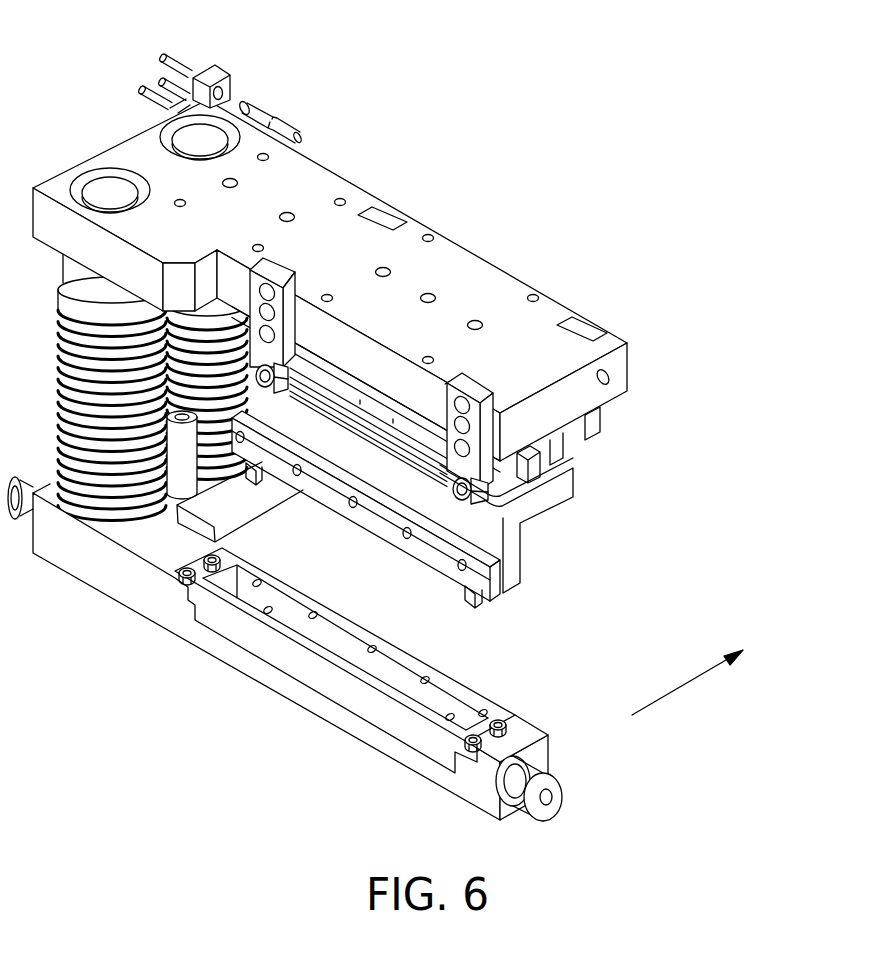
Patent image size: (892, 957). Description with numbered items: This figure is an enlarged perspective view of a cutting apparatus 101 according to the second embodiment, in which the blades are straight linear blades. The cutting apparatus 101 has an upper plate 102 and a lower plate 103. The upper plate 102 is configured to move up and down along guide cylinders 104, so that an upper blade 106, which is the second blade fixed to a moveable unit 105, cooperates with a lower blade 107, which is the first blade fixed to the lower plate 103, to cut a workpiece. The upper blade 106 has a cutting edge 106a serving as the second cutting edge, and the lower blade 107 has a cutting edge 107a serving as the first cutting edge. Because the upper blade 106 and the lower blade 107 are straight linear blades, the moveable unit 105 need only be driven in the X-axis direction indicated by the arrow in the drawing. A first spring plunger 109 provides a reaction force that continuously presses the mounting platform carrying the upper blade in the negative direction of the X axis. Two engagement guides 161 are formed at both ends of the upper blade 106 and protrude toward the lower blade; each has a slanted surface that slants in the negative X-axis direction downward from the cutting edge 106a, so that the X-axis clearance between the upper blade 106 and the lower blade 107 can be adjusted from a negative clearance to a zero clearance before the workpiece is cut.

The cutting apparatus 101 is at (73, 81).
The upper plate 102 is at (447, 233).
The lower plate 103 is at (90, 575).
The guide cylinders 104 is at (207, 337).
The moveable unit 105 is at (582, 552).
The upper blade 106 is at (493, 597).
The cutting edge 106a is at (387, 542).
The lower blade 107 is at (503, 703).
The cutting edge 107a is at (377, 634).
The first spring plunger 109 is at (593, 433).
The engagement guides 161 is at (253, 482).